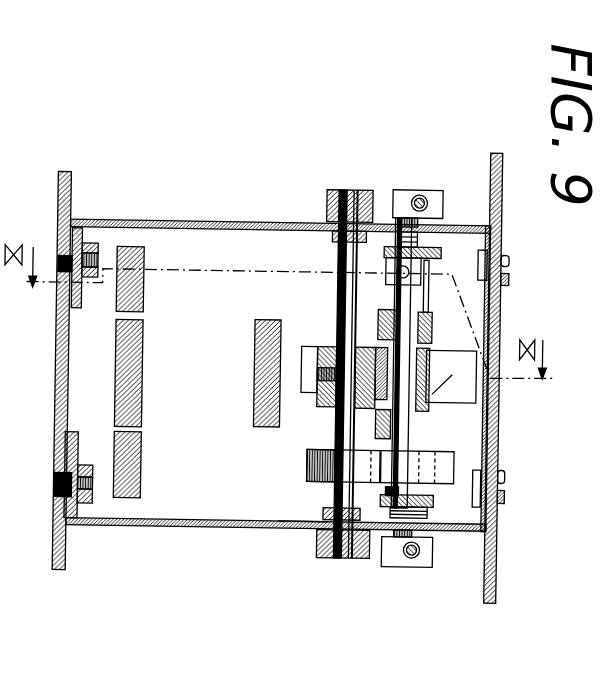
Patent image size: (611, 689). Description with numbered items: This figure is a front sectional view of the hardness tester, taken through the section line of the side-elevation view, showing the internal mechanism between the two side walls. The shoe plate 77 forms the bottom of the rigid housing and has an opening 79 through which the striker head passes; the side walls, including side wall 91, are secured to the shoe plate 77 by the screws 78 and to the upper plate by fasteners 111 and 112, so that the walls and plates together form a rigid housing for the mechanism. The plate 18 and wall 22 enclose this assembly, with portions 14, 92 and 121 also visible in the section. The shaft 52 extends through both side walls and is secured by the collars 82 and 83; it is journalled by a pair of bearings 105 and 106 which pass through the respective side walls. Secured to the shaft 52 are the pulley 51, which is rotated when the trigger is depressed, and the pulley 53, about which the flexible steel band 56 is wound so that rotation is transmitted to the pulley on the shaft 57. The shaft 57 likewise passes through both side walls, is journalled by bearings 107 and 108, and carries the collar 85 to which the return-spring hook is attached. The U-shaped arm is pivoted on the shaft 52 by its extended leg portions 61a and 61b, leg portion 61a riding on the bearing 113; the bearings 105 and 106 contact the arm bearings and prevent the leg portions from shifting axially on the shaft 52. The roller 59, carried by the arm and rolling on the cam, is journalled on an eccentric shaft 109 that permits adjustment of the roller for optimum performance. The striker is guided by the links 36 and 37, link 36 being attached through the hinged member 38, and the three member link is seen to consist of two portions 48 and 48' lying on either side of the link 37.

The cross bar 14 is at (432, 448).
The housing 18 is at (252, 222).
The side wall 22 is at (498, 565).
The link 36 is at (271, 427).
The link 37 is at (143, 366).
The hinged member 38 is at (320, 406).
The second member of three member link 48 is at (149, 279).
The portion of three member link 48' is at (148, 464).
The pulley 51 is at (429, 311).
The shaft 52 is at (414, 556).
The pulley 53 is at (434, 487).
The flexible steel band 56 is at (371, 482).
The shaft 57 is at (337, 341).
The roller 59 is at (432, 402).
The extended leg portion 61a is at (432, 252).
The extended leg portion 61b is at (438, 506).
The shoe plate 77 is at (56, 570).
The screws 78 is at (62, 248).
The opening 79 is at (57, 472).
The collar 82 is at (430, 188).
The collar 83 is at (424, 566).
The collar 85 is at (325, 204).
The side wall 91 is at (305, 530).
The collar 92 is at (360, 558).
The bearing 105 is at (420, 234).
The bearing 106 is at (428, 528).
The bearing 107 is at (330, 236).
The bearing 108 is at (325, 516).
The eccentric shaft 109 is at (394, 285).
The fastener 111 is at (508, 275).
The fastener 112 is at (506, 492).
The bearing 113 is at (421, 274).
The block 121 is at (463, 401).